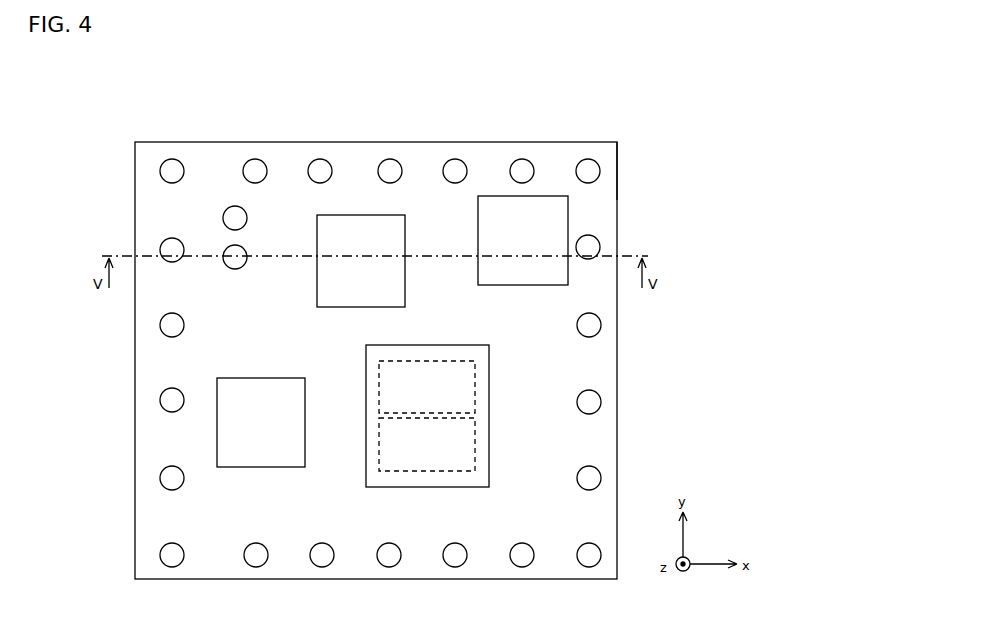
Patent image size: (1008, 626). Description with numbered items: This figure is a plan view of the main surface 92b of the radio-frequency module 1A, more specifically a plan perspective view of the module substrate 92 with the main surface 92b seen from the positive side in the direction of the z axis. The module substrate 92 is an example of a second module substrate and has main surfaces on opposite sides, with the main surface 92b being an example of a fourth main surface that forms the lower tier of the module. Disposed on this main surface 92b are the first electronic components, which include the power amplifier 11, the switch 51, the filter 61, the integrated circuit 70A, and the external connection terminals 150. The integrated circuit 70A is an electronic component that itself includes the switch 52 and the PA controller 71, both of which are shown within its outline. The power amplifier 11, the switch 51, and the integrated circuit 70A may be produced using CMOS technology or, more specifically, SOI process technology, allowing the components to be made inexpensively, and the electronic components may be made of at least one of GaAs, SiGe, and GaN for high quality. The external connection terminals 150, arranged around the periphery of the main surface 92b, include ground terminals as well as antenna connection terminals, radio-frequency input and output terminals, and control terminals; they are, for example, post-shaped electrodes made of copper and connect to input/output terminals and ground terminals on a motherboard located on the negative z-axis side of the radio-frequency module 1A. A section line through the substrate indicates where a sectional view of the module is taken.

The radio-frequency module 1A is at (658, 116).
The module substrate 92 is at (415, 142).
The main surface 92b is at (572, 150).
The external connection terminals 150 is at (247, 162).
The filter 61 is at (366, 215).
The switch 51 is at (528, 196).
The power amplifier 11 is at (266, 378).
The integrated circuit 70A is at (420, 345).
The switch 52 is at (379, 380).
The PA controller 71 is at (379, 449).